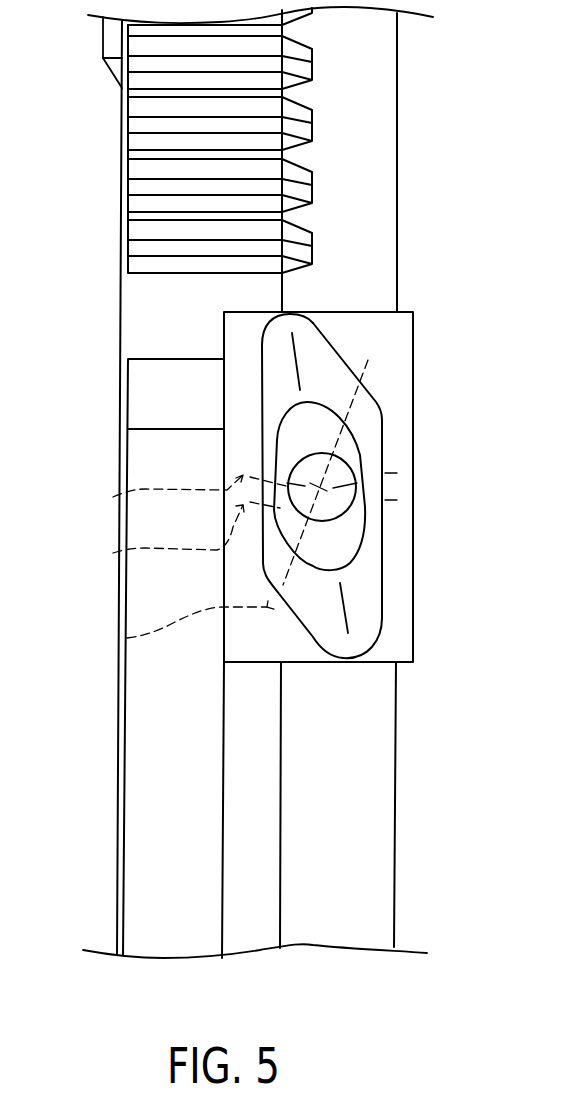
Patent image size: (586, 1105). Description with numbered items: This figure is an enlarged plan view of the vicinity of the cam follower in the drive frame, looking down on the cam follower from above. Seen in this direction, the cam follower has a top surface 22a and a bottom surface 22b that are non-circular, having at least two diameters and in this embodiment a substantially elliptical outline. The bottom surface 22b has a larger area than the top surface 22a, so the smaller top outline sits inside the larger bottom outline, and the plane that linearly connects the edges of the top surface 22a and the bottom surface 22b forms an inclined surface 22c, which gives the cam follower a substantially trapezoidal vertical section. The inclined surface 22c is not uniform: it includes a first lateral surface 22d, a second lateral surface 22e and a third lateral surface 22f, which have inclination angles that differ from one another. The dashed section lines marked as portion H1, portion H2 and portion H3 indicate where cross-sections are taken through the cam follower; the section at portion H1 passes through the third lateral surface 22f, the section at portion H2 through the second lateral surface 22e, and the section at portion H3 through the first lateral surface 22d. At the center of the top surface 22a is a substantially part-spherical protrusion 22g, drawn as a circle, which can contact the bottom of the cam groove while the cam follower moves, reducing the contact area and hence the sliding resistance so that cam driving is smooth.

The top surface 22a is at (333, 537).
The bottom surface 22b is at (385, 545).
The inclined surface 22c is at (357, 628).
The first lateral surface 22d is at (313, 347).
The second lateral surface 22e is at (375, 467).
The third lateral surface 22f is at (373, 512).
The protrusion 22g is at (287, 470).
The portion H1 is at (113, 497).
The portion H2 is at (113, 553).
The portion H3 is at (127, 638).